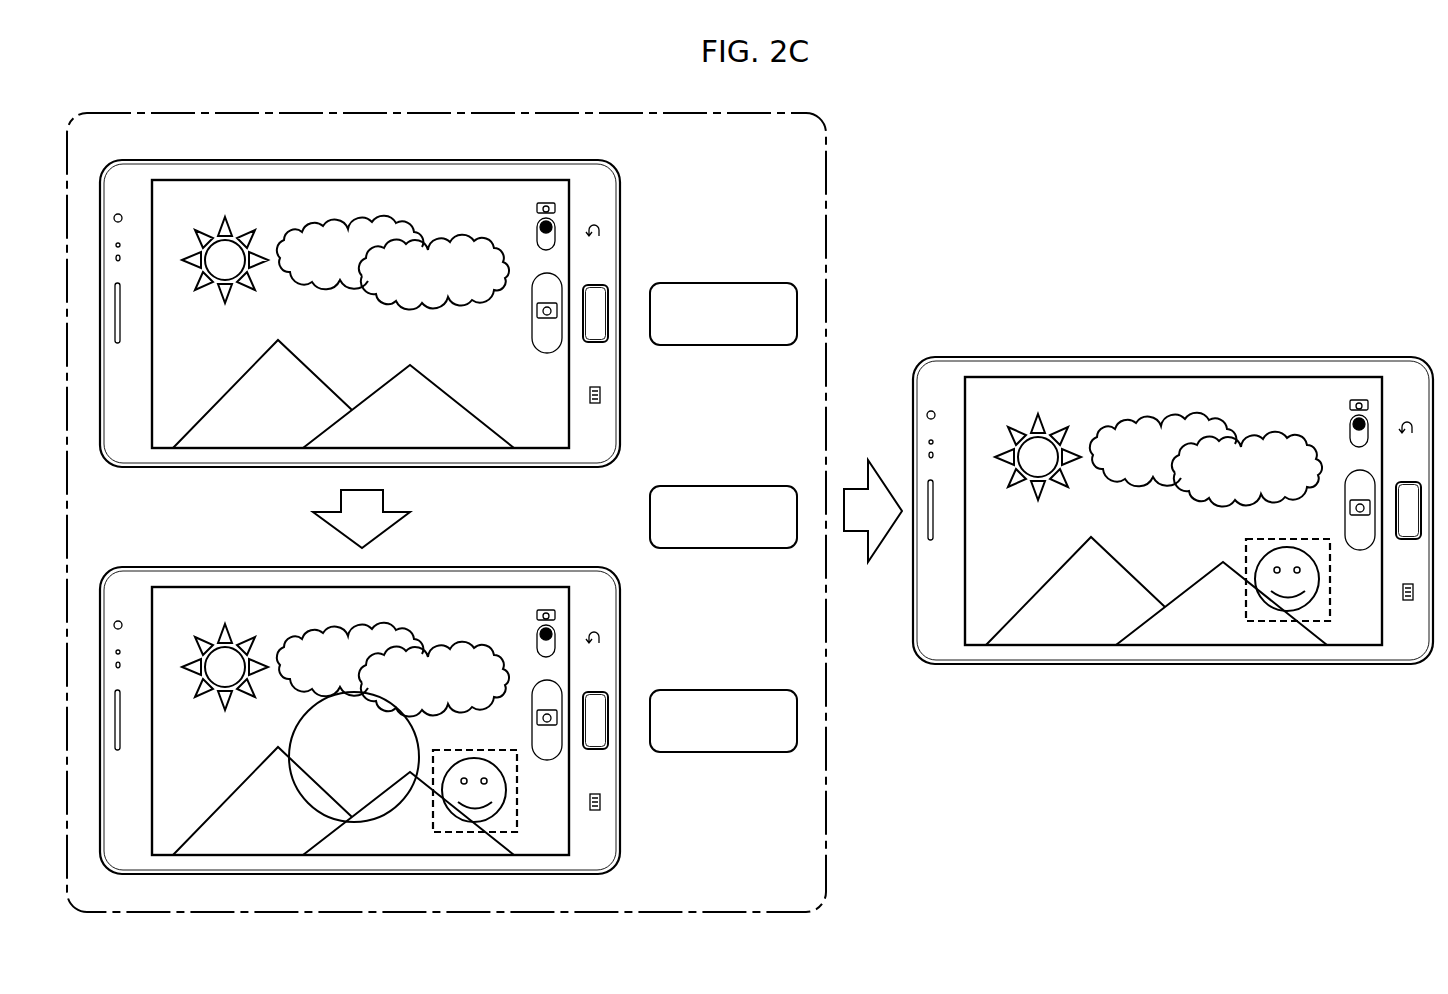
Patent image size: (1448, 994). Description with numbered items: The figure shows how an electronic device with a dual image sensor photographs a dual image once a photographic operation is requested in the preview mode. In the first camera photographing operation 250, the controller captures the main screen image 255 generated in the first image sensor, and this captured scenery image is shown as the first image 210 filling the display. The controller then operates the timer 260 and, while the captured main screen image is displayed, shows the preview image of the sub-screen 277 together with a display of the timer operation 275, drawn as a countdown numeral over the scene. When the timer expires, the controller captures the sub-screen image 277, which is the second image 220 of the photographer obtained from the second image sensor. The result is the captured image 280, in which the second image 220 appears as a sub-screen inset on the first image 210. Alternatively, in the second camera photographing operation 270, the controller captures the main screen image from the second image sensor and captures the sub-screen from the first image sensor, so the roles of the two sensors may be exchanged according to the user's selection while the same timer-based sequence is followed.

The main screen image capture 255 is at (480, 145).
The first camera photographing operation 250 is at (725, 283).
The timer operation 260 is at (725, 486).
The second camera photographing operation 270 is at (725, 690).
The timer operation display 275 is at (385, 723).
The sub-screen preview image 277 is at (508, 813).
The captured dual image 280 is at (1278, 326).
The first image 210 is at (1168, 392).
The second image 220 is at (1260, 607).